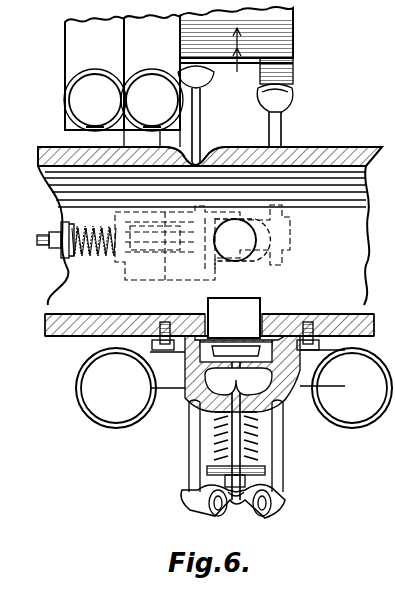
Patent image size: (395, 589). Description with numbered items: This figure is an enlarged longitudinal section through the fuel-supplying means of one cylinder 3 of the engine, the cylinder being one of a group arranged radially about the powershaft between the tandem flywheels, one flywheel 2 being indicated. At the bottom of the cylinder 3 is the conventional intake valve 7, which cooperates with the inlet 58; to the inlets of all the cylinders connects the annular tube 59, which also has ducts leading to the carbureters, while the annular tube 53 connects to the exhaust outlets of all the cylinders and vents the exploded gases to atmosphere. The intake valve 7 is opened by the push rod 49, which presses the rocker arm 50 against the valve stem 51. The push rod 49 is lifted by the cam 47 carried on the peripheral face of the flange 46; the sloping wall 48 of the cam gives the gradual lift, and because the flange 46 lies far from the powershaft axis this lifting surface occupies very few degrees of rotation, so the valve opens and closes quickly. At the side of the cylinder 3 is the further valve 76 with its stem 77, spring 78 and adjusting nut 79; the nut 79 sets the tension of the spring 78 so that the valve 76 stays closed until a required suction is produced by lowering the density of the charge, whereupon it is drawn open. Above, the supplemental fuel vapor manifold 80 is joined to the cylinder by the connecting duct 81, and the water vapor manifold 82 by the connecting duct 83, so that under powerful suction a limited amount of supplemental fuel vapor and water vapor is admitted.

The flywheel 2 is at (234, 63).
The cylinder 3 is at (366, 146).
The intake valve 7 is at (233, 346).
The flange 46 is at (293, 33).
The cam 47 is at (296, 80).
The sloping wall 48 is at (293, 62).
The push rod 49 is at (284, 130).
The rocker arm 50 is at (286, 506).
The valve stem 51 is at (244, 440).
The annular tube 53 is at (116, 388).
The inlet 58 is at (280, 412).
The annular tube 59 is at (272, 375).
The valve 76 is at (192, 262).
The stem 77 is at (44, 247).
The spring 78 is at (76, 262).
The adjusting nut 79 is at (62, 232).
The supplemental fuel vapor manifold 80 is at (95, 74).
The connecting duct 81 is at (108, 147).
The water vapor manifold 82 is at (152, 73).
The connecting duct 83 is at (182, 139).